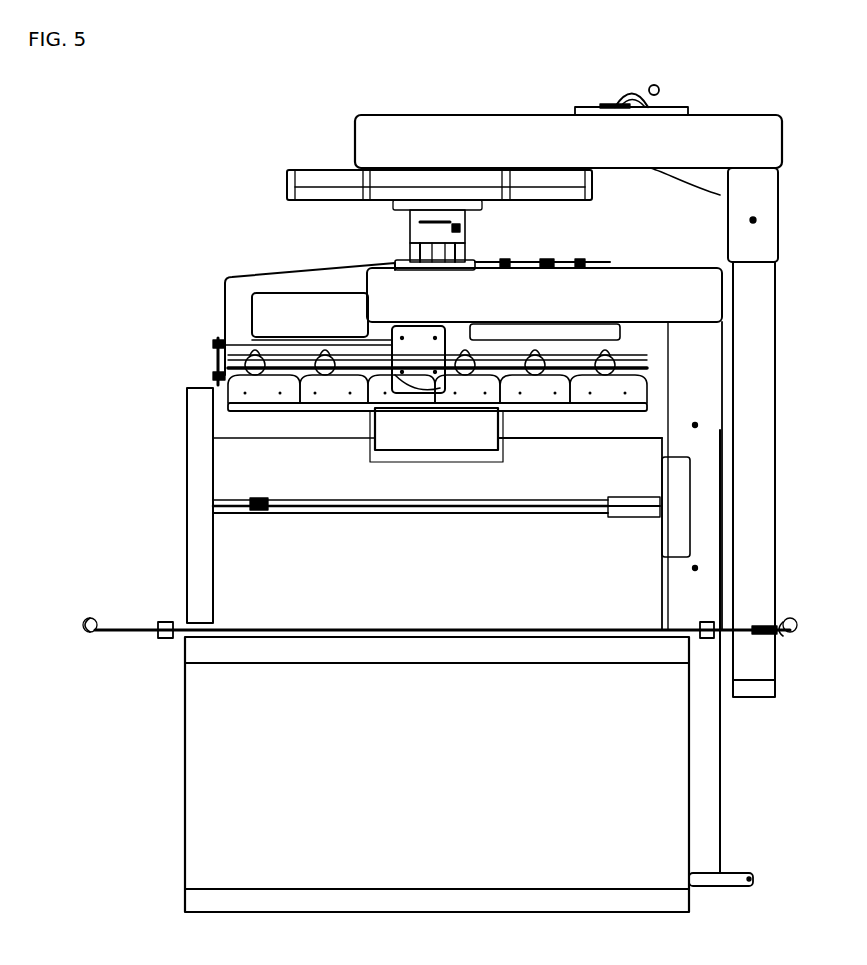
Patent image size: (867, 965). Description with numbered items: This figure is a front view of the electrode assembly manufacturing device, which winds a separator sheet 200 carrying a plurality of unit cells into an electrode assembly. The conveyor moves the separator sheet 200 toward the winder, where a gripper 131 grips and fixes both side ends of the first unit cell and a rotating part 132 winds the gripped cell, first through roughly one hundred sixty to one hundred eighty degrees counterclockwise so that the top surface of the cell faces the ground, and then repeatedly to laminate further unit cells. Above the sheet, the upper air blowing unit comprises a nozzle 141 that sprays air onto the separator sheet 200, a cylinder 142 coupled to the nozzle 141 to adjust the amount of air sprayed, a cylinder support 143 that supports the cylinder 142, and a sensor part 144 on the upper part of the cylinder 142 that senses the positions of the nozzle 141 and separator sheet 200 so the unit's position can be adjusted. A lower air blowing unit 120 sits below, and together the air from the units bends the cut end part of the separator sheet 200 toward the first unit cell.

The lower air blowing unit 120 is at (132, 640).
The gripper 131 is at (232, 515).
The rotating part 132 is at (187, 528).
The nozzle 141 is at (247, 394).
The cylinder 142 is at (280, 275).
The cylinder support 143 is at (310, 178).
The sensor part 144 is at (582, 290).
The separator sheet 200 is at (433, 515).